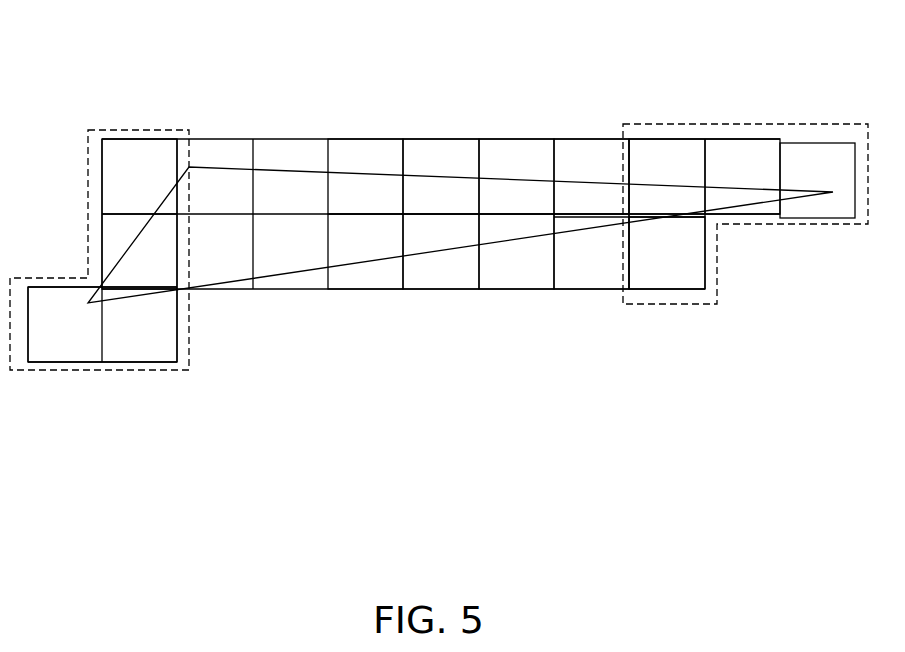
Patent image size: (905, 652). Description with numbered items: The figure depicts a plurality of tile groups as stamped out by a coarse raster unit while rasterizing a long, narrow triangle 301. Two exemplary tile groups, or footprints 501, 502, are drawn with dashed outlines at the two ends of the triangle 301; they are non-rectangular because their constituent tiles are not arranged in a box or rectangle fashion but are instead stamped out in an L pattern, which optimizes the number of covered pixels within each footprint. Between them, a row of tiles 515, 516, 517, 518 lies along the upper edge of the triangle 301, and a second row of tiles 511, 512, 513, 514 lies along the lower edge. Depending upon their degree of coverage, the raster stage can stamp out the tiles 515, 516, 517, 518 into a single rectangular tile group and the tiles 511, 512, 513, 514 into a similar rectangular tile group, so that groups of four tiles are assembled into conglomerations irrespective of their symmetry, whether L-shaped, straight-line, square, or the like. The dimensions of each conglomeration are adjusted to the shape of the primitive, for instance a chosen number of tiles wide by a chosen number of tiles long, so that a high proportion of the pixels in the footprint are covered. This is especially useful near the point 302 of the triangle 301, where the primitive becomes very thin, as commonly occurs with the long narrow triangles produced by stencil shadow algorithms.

The triangle polygon 301 is at (238, 185).
The point 302 is at (815, 190).
The tile group 501 is at (680, 125).
The tile group 502 is at (113, 130).
The tile 511 is at (340, 289).
The tile 512 is at (420, 289).
The tile 513 is at (502, 289).
The tile 514 is at (577, 289).
The tile 515 is at (353, 138).
The tile 516 is at (421, 138).
The tile 517 is at (502, 138).
The tile 518 is at (579, 138).